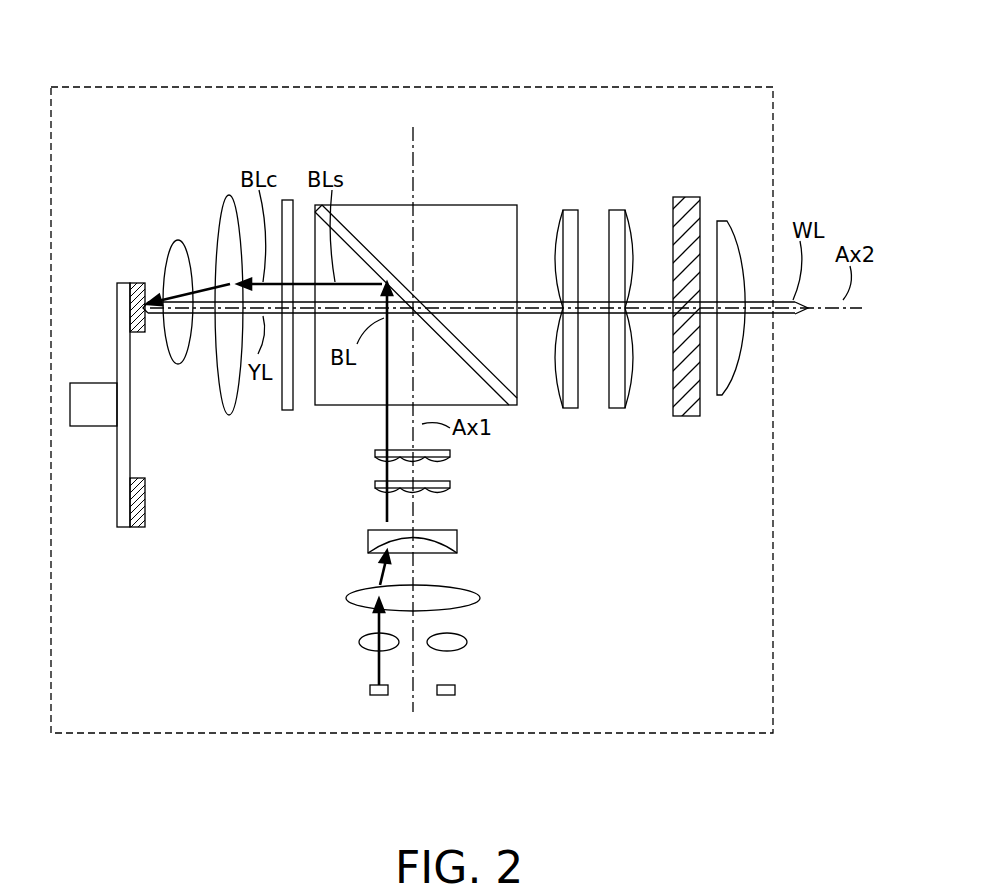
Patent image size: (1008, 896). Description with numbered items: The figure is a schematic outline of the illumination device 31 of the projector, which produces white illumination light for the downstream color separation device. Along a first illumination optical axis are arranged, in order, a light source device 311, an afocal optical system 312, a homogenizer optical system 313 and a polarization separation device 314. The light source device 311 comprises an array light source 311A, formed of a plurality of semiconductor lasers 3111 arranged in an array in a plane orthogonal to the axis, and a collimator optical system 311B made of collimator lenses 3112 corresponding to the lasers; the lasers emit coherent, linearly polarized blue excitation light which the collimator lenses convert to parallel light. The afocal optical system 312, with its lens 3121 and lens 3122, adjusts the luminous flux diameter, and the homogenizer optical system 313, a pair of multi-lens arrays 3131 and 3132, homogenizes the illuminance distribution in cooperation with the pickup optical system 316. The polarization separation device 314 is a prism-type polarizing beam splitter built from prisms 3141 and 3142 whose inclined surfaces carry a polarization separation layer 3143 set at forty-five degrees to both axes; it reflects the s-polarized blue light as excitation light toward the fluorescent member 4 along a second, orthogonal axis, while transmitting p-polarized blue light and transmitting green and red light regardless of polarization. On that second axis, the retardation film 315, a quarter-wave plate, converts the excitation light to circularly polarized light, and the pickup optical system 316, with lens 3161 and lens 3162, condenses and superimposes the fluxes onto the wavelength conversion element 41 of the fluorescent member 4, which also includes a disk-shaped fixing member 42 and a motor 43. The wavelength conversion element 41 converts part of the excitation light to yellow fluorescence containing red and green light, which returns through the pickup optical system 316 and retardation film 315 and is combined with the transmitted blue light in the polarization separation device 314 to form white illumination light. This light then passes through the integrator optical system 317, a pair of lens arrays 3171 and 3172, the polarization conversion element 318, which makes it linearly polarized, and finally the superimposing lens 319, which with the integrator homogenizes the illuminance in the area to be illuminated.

The illumination device 31 is at (722, 86).
The fluorescent member 4 is at (133, 470).
The wavelength conversion element 41 is at (144, 478).
The fixing member 42 is at (117, 444).
The motor 43 is at (91, 385).
The pickup optical system 316 is at (181, 256).
The lens 3161 is at (224, 202).
The lens 3162 is at (178, 241).
The retardation film 315 is at (288, 198).
The polarization separation device 314 is at (408, 288).
The prism 3141 is at (333, 407).
The prism 3142 is at (438, 217).
The polarization separation layer 3143 is at (363, 252).
The integrator optical system 317 is at (591, 253).
The lens array 3171 is at (571, 209).
The lens array 3172 is at (616, 209).
The polarization conversion element 318 is at (689, 196).
The superimposing lens 319 is at (735, 234).
The homogenizer optical system 313 is at (488, 471).
The multi-lens array 3131 is at (452, 488).
The multi-lens array 3132 is at (452, 456).
The afocal optical system 312 is at (474, 569).
The lens 3121 is at (455, 587).
The lens 3122 is at (460, 540).
The light source device 311 is at (477, 674).
The semiconductor laser 3111 is at (447, 697).
The collimator lens 3112 is at (444, 634).
The array light source 311A is at (474, 683).
The collimator optical system 311B is at (480, 644).